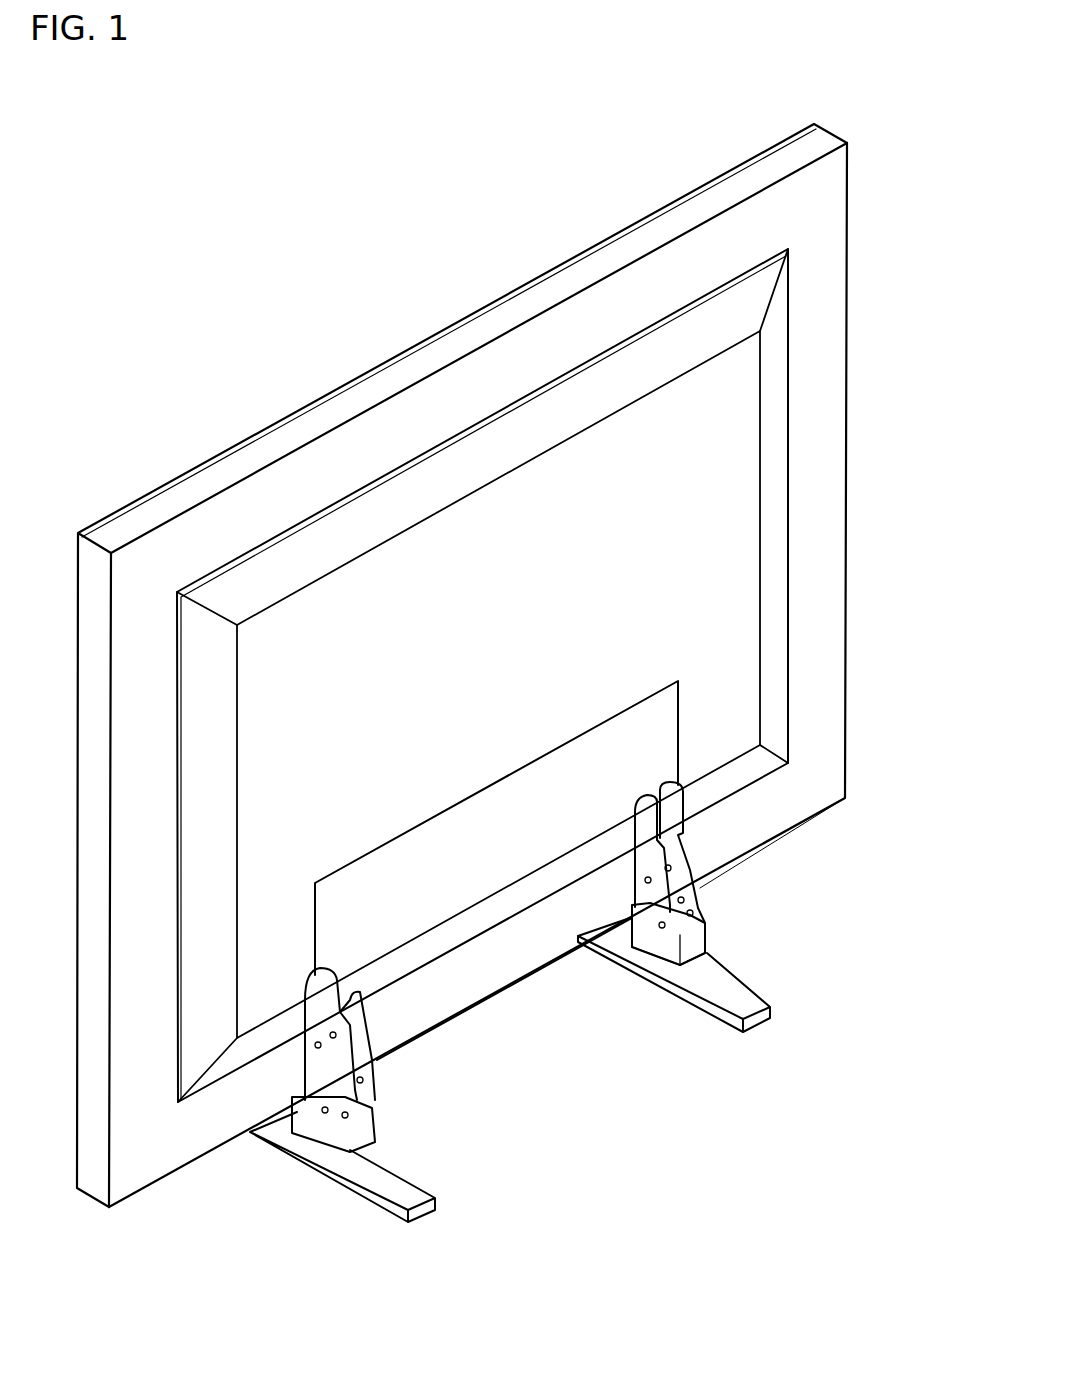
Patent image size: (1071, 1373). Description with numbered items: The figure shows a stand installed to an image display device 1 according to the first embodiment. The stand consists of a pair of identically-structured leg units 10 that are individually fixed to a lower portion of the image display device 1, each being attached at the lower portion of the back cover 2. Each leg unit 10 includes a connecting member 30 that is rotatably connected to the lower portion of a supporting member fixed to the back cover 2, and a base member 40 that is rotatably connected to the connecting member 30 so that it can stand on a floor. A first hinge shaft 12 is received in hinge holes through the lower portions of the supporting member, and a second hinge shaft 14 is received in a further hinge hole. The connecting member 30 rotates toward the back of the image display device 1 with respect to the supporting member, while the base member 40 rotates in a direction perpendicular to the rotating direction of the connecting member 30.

The image display device 1 is at (443, 354).
The back cover 2 is at (735, 497).
The leg unit 10 is at (450, 1134).
The first hinge shaft 12 is at (700, 888).
The second hinge shaft 14 is at (708, 960).
The connecting member 30 is at (705, 930).
The base member 40 is at (760, 1017).